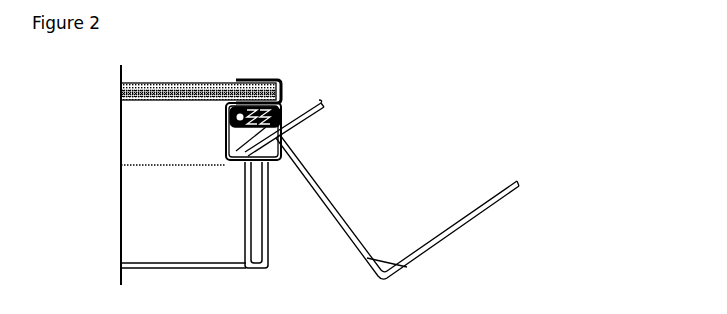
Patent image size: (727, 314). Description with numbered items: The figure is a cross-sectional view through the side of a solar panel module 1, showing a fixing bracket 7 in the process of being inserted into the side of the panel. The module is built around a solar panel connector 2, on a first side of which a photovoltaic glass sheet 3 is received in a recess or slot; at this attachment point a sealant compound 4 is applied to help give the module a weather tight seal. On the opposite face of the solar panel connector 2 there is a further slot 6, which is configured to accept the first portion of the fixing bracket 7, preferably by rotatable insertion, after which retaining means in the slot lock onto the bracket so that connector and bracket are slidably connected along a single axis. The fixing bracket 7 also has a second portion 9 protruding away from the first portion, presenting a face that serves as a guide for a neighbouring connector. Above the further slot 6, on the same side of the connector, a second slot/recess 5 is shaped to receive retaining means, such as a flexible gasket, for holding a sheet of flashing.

The solar panel module 1 is at (119, 152).
The solar panel connector 2 is at (268, 268).
The photovoltaic glass sheet 3 is at (161, 85).
The sealant compound 4 is at (240, 80).
The second slot/recess 5 is at (285, 112).
The further slot 6 is at (270, 154).
The fixing bracket 7 is at (452, 231).
The second portion 9 is at (309, 118).